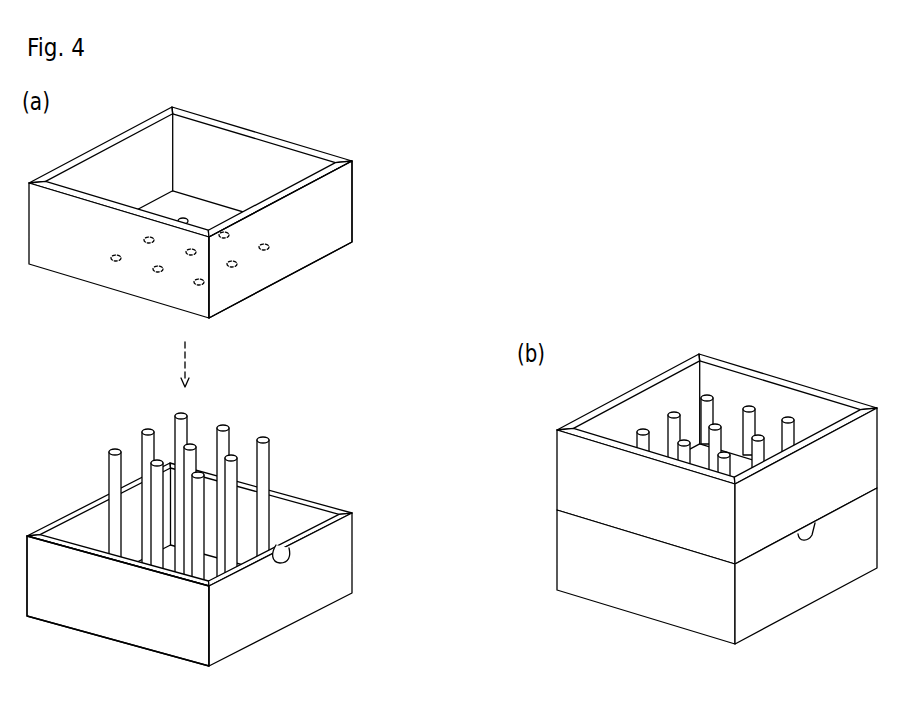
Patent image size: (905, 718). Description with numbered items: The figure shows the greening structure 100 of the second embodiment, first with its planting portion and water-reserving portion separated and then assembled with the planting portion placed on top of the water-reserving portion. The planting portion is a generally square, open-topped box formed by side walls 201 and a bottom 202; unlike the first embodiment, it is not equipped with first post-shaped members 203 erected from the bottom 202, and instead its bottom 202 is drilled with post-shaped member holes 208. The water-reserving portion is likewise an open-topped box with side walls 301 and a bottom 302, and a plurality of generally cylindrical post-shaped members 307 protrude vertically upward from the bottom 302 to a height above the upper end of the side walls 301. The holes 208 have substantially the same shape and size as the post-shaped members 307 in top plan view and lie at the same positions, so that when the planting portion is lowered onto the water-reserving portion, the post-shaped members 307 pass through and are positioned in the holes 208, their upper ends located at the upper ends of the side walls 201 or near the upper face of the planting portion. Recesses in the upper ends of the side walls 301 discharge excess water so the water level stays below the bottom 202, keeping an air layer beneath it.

The greening structure 100 is at (717, 493).
The side walls 201 is at (256, 239).
The bottom 202 is at (167, 205).
The first post-shaped members 203 is at (693, 410).
The post-shaped member holes 208 is at (236, 267).
The side walls 301 is at (54, 610).
The bottom 302 is at (212, 572).
The post-shaped members 307 is at (107, 508).